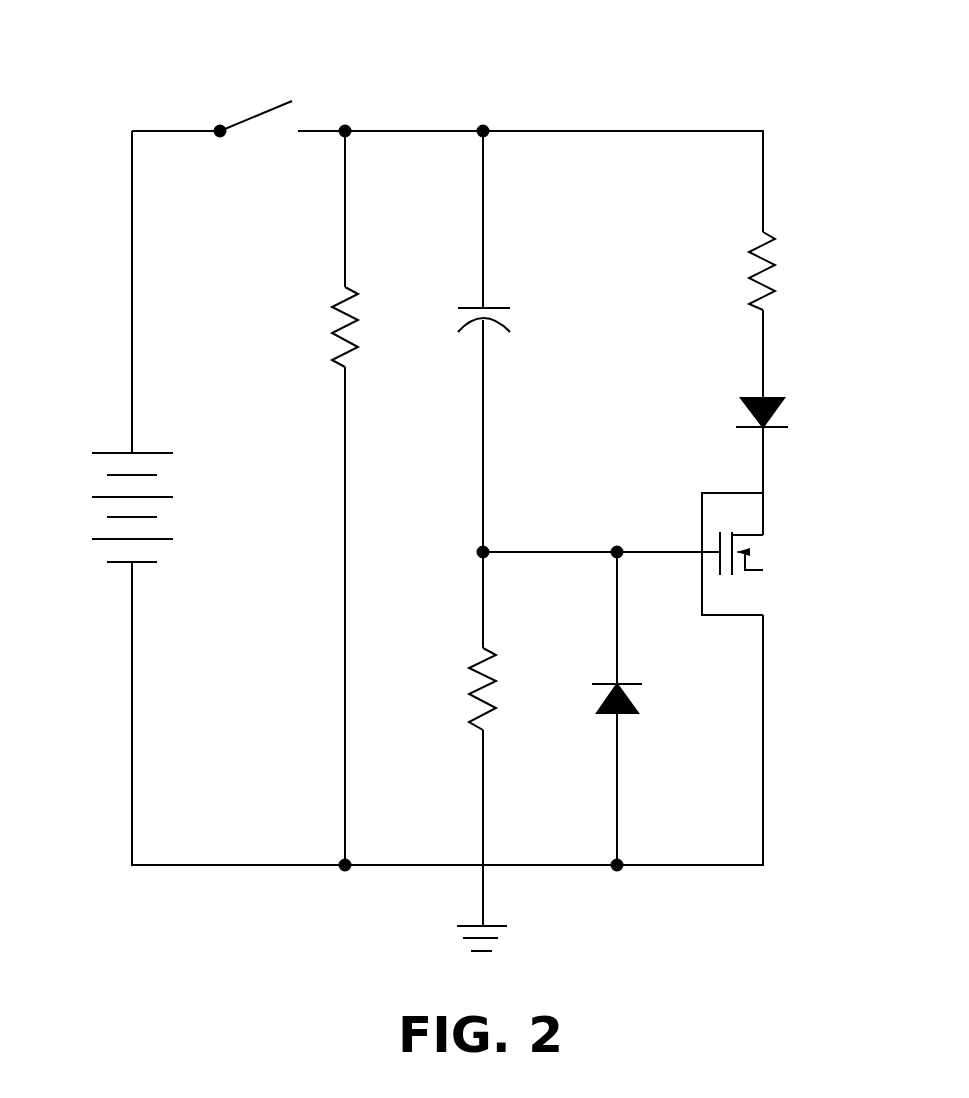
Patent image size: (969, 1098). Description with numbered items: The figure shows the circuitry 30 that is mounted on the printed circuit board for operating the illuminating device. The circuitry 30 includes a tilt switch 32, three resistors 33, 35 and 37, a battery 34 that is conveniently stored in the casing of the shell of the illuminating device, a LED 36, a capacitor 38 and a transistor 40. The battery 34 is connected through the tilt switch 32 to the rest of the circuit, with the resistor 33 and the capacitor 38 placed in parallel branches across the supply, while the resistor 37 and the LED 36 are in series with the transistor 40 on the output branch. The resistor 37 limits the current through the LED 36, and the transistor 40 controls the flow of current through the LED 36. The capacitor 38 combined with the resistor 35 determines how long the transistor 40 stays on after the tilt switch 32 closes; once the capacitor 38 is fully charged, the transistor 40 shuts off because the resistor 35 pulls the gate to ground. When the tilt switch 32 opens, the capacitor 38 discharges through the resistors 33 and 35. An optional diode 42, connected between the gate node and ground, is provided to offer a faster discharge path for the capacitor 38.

The circuitry 30 is at (132, 74).
The tilt switch 32 is at (248, 103).
The resistor 33 is at (320, 328).
The battery 34 is at (90, 466).
The resistor 35 is at (507, 673).
The LED 36 is at (802, 434).
The resistor 37 is at (792, 284).
The capacitor 38 is at (503, 294).
The transistor 40 is at (765, 597).
The diode 42 is at (638, 668).